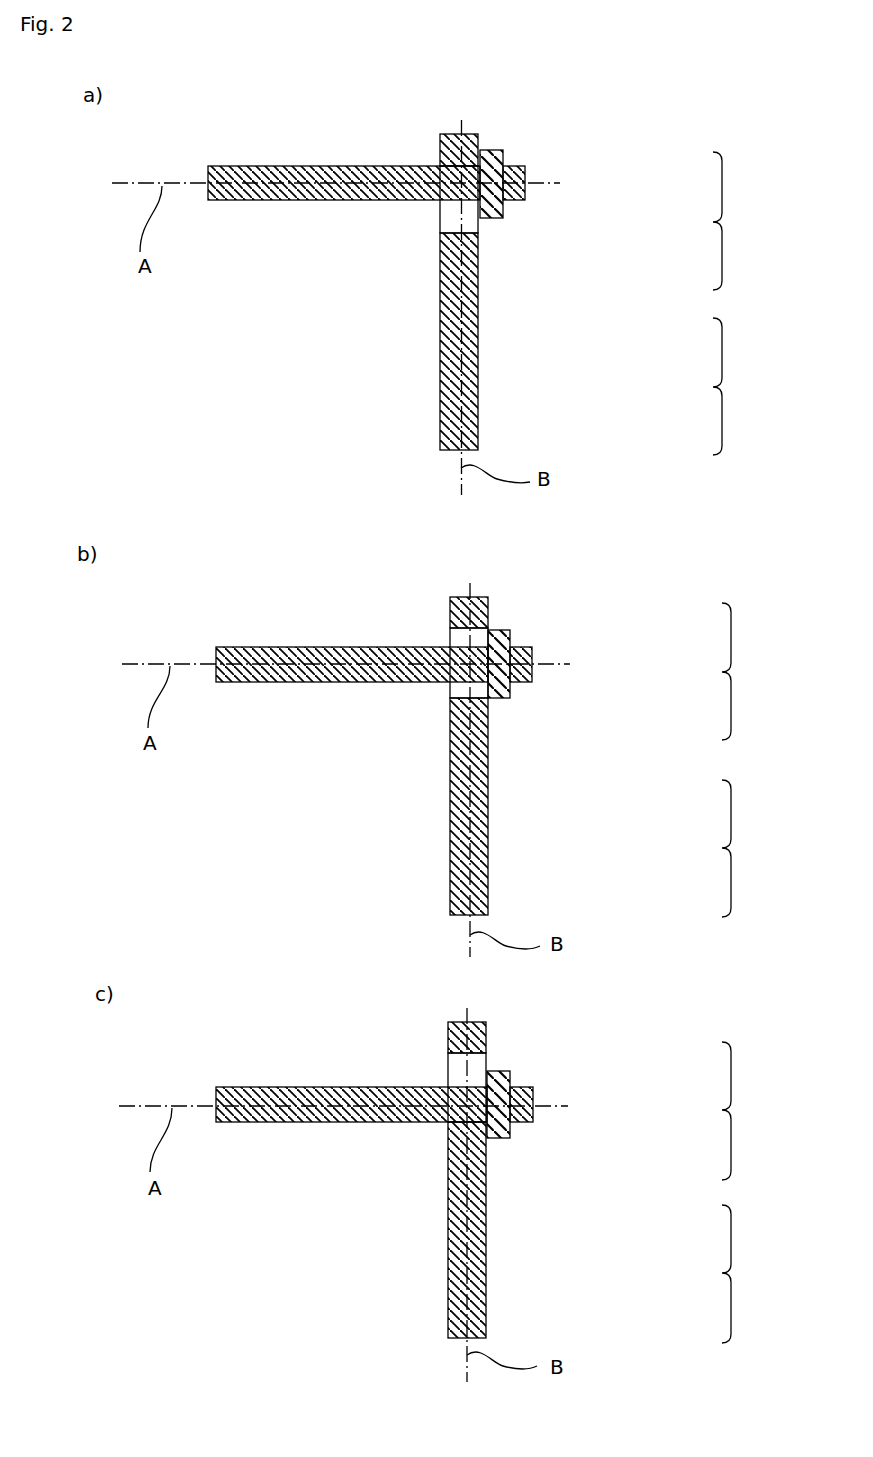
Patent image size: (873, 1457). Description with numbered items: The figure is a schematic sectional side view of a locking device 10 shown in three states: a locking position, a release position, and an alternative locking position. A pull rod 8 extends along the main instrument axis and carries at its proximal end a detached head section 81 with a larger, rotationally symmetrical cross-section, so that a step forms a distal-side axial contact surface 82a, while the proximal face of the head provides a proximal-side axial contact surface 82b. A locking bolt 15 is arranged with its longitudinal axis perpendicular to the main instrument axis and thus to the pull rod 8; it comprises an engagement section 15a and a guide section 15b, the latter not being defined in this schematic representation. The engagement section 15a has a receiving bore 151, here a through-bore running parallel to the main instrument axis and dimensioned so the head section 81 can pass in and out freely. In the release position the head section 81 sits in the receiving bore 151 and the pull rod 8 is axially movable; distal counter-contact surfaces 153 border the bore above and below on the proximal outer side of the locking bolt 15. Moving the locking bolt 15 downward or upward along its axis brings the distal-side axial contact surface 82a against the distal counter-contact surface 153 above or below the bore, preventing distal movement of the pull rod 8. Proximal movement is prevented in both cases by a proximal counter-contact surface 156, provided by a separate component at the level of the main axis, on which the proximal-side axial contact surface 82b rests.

The pull rod 8 is at (350, 166).
The locking device 10 is at (292, 303).
The locking bolt 15 is at (482, 388).
The engagement section 15a is at (753, 666).
The guide section 15b is at (753, 830).
The receiving bore 151 is at (440, 242).
The head section 81 is at (503, 218).
The distal-side axial contact surface 82a is at (460, 631).
The proximal-side axial contact surface 82b is at (512, 638).
The distal counter-contact surface 153 is at (488, 627).
The proximal counter-contact surface 156 is at (512, 682).